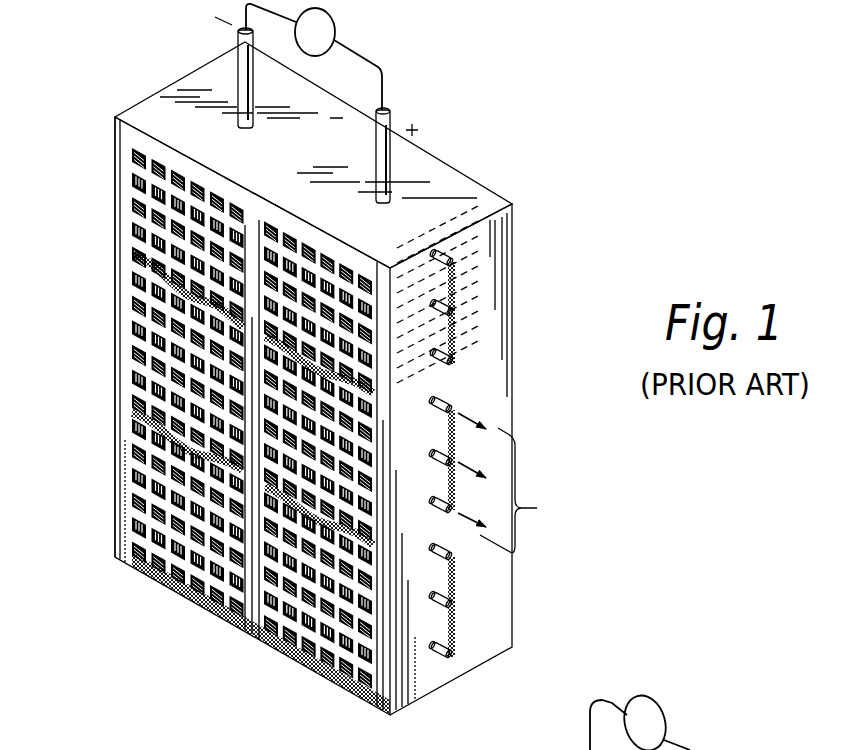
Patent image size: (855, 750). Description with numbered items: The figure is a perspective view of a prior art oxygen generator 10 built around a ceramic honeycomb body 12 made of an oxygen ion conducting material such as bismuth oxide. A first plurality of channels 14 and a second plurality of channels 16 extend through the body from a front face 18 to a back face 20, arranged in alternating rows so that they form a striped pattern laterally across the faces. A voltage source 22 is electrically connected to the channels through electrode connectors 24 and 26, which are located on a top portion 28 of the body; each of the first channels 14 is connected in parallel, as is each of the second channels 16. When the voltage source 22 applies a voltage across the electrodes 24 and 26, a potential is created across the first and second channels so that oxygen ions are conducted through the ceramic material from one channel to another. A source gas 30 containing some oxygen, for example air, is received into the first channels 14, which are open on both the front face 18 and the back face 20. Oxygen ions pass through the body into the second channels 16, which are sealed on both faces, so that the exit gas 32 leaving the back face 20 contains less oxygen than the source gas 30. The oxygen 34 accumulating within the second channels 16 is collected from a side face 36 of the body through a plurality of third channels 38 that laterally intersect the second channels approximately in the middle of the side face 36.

The oxygen generator 10 is at (110, 94).
The ceramic honeycomb body 12 is at (118, 442).
The first plurality of channels 14 is at (132, 152).
The second plurality of channels 16 is at (132, 177).
The front face 18 is at (263, 582).
The back face 20 is at (519, 394).
The voltage source 22 is at (662, 710).
The electrode connector 24 is at (390, 163).
The electrode connector 26 is at (243, 68).
The top portion 28 is at (445, 207).
The source gas 30 is at (141, 593).
The exit gas 32 is at (337, 22).
The oxygen 34 is at (498, 473).
The side face 36 is at (483, 587).
The third channels 38 is at (444, 364).